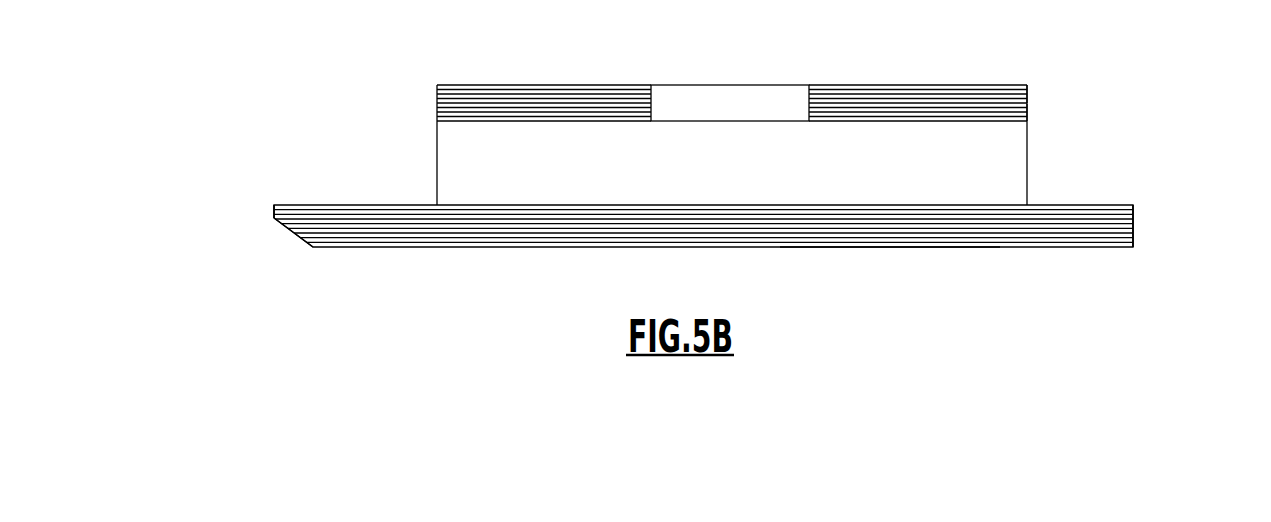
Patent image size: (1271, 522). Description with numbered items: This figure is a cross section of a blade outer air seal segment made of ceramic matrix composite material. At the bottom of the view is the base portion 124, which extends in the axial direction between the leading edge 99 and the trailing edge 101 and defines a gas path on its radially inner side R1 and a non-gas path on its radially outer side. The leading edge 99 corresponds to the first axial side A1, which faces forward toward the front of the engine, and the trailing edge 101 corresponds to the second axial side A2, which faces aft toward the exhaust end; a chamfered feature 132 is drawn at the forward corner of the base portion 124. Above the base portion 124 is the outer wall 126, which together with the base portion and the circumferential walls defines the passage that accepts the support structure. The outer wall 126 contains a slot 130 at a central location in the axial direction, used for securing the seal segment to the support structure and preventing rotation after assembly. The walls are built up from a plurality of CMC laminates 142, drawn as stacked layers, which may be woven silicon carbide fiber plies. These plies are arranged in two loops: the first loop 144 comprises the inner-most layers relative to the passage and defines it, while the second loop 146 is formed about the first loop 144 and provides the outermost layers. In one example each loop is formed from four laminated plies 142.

The outer wall 126 is at (527, 85).
The slot 130 is at (724, 97).
The CMC laminates 142 is at (945, 97).
The second loop 146 is at (1032, 102).
The first loop 144 is at (1032, 105).
The base portion 124 is at (547, 247).
The radially inner side R1 is at (880, 247).
The first axial side A1 is at (274, 208).
The leading edge 99 is at (274, 219).
The chamfered edge 132 is at (303, 239).
The second axial side A2 is at (1133, 222).
The trailing edge 101 is at (1133, 240).